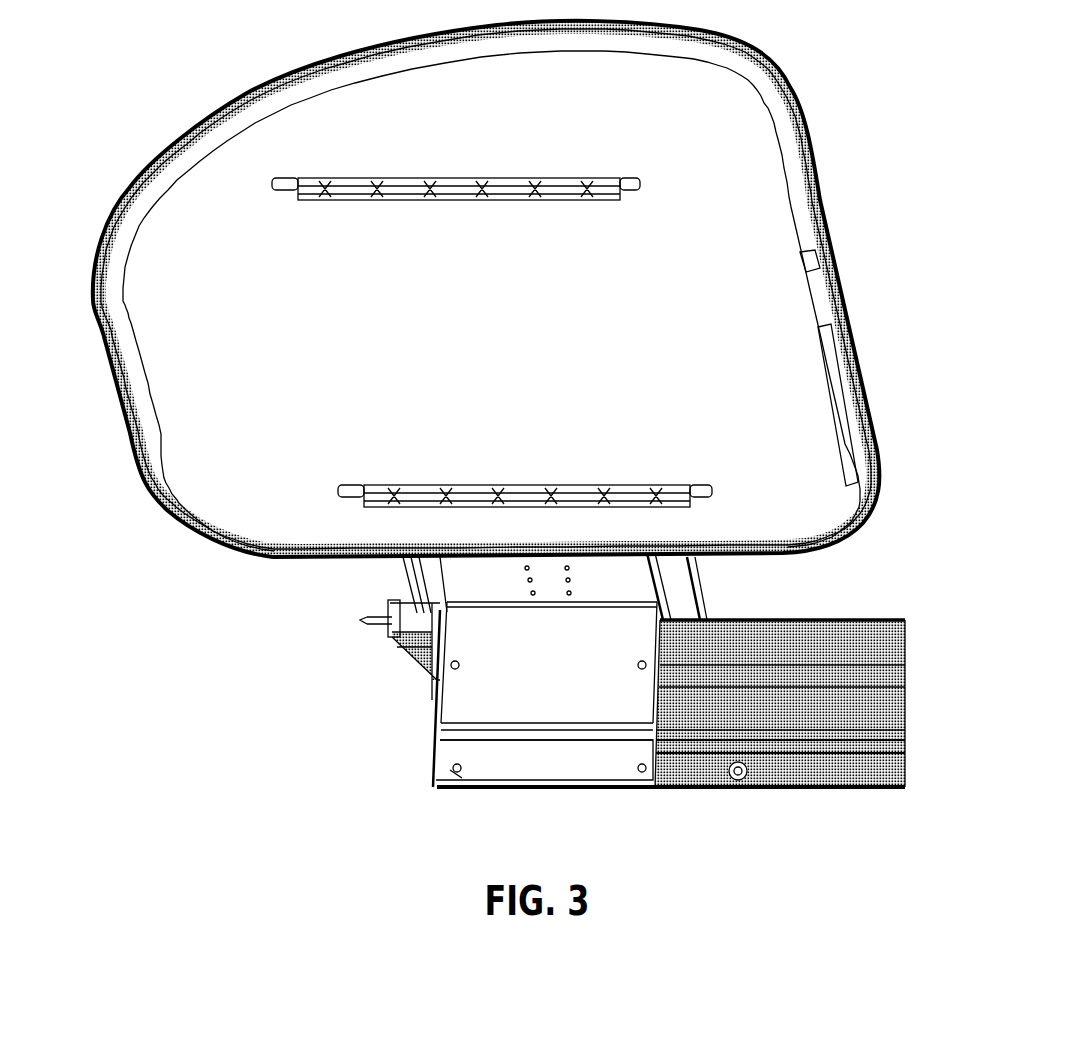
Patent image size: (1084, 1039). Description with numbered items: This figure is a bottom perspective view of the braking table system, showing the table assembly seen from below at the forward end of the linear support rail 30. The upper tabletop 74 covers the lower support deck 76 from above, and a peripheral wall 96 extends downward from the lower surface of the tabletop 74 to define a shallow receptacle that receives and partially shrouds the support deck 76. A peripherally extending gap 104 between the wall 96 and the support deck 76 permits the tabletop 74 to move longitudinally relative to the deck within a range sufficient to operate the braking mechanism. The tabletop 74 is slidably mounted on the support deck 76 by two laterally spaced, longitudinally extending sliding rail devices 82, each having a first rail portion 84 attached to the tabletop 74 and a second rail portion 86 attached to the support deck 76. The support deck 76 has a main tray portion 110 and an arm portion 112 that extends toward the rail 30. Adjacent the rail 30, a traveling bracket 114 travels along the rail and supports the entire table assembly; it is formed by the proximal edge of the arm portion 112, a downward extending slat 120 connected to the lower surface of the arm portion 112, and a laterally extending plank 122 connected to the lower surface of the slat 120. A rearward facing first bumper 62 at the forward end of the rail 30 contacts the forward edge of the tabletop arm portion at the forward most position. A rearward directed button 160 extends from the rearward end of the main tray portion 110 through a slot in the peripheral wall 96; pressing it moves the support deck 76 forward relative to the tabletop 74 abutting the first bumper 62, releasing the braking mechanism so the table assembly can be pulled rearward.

The linear support rail 30 is at (671, 707).
The first bumper 62 is at (410, 627).
The tabletop 74 is at (268, 88).
The support deck 76 is at (208, 313).
The sliding rail device 82 is at (506, 313).
The first rail portion 84 is at (455, 178).
The second rail portion 86 is at (357, 200).
The peripheral wall 96 is at (100, 328).
The peripherally extending gap 104 is at (133, 378).
The main tray portion 110 is at (240, 492).
The arm portion 112 is at (600, 578).
The traveling bracket 114 is at (688, 712).
The slat 120 is at (565, 705).
The plank 122 is at (528, 757).
The button 160 is at (820, 283).